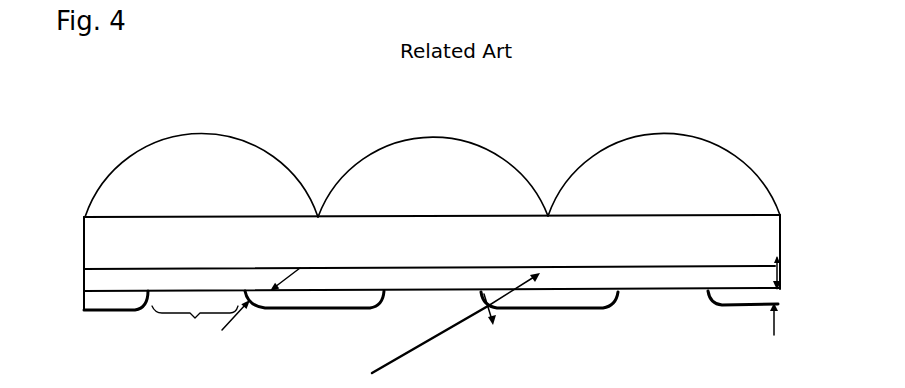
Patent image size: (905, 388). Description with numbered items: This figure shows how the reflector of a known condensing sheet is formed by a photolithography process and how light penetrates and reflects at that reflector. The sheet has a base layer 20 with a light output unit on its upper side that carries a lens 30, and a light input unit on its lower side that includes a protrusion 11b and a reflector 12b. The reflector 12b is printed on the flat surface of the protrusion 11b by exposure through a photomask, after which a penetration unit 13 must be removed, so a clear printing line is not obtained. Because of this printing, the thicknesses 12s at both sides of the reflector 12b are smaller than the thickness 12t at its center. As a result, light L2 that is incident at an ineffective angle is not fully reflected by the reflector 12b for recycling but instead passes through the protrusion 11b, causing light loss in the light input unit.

The lens 30 is at (697, 138).
The base layer 20 is at (758, 238).
The thickness of the center of the reflector 12t is at (780, 273).
The thicknesses of both sides of the reflector 12s is at (286, 281).
The penetration unit 13 is at (195, 319).
The reflector 12b is at (611, 307).
The protrusion 11b is at (612, 283).
The light incident at an ineffective angle L2 is at (450, 328).